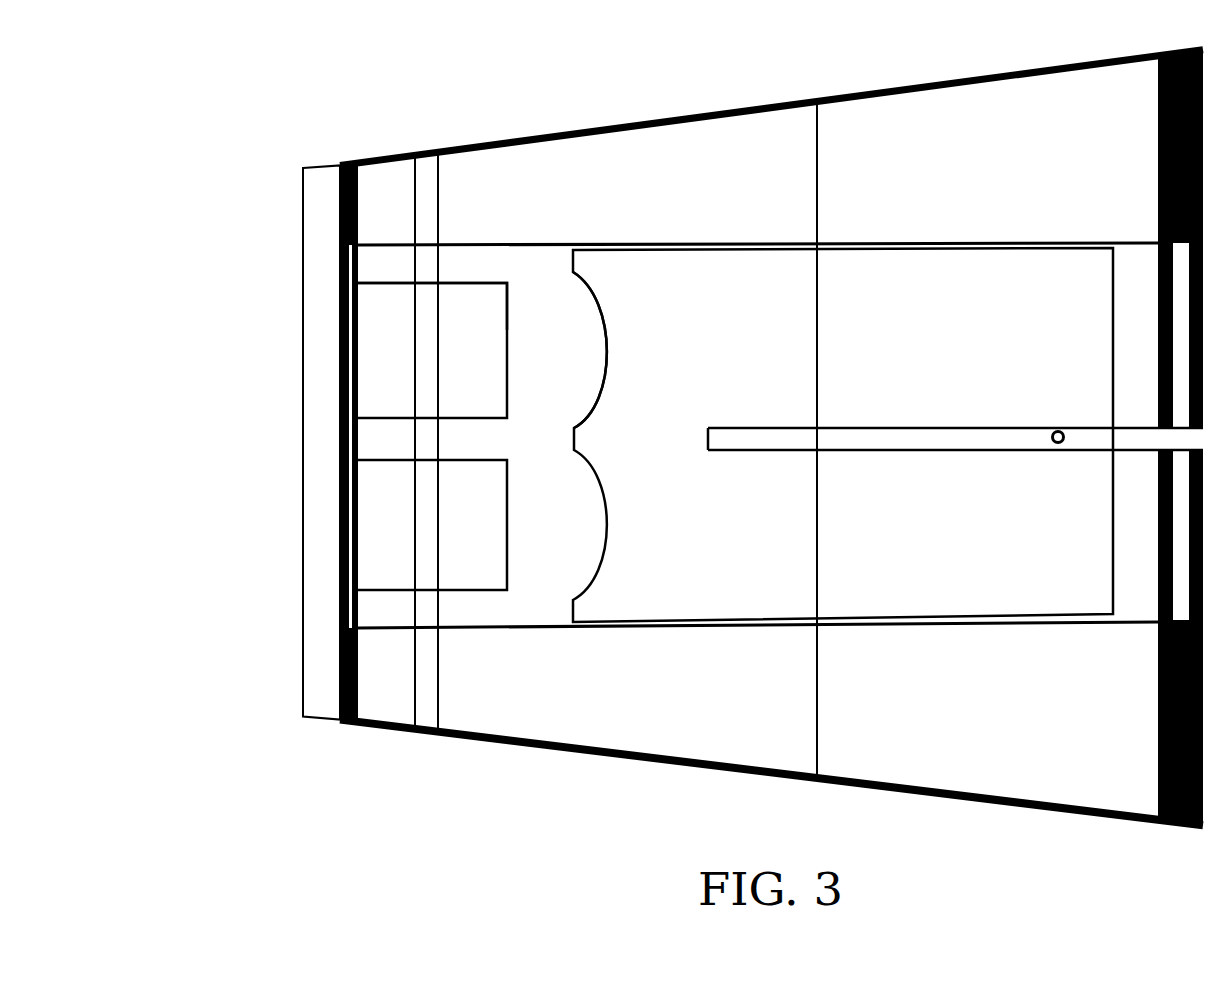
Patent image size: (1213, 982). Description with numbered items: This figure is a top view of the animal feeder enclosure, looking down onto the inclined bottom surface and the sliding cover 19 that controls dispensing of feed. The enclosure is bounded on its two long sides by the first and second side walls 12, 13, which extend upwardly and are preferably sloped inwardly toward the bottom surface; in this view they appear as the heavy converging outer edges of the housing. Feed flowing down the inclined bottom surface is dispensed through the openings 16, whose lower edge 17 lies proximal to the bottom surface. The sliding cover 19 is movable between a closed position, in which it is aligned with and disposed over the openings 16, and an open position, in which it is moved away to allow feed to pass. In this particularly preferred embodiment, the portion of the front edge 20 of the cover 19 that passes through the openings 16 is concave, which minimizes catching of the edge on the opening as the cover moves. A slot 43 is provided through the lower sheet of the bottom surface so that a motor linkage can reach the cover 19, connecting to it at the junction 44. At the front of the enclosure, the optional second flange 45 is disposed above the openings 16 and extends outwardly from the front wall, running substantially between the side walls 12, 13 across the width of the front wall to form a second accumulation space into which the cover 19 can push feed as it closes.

The first side wall 12 is at (487, 143).
The second side wall 13 is at (575, 752).
The opening 16 is at (388, 380).
The lower edge of the opening 17 is at (505, 312).
The sliding cover 19 is at (690, 308).
The front edge of the cover 20 is at (598, 300).
The slot 43 is at (920, 438).
The junction 44 is at (1058, 430).
The second flange 45 is at (323, 633).